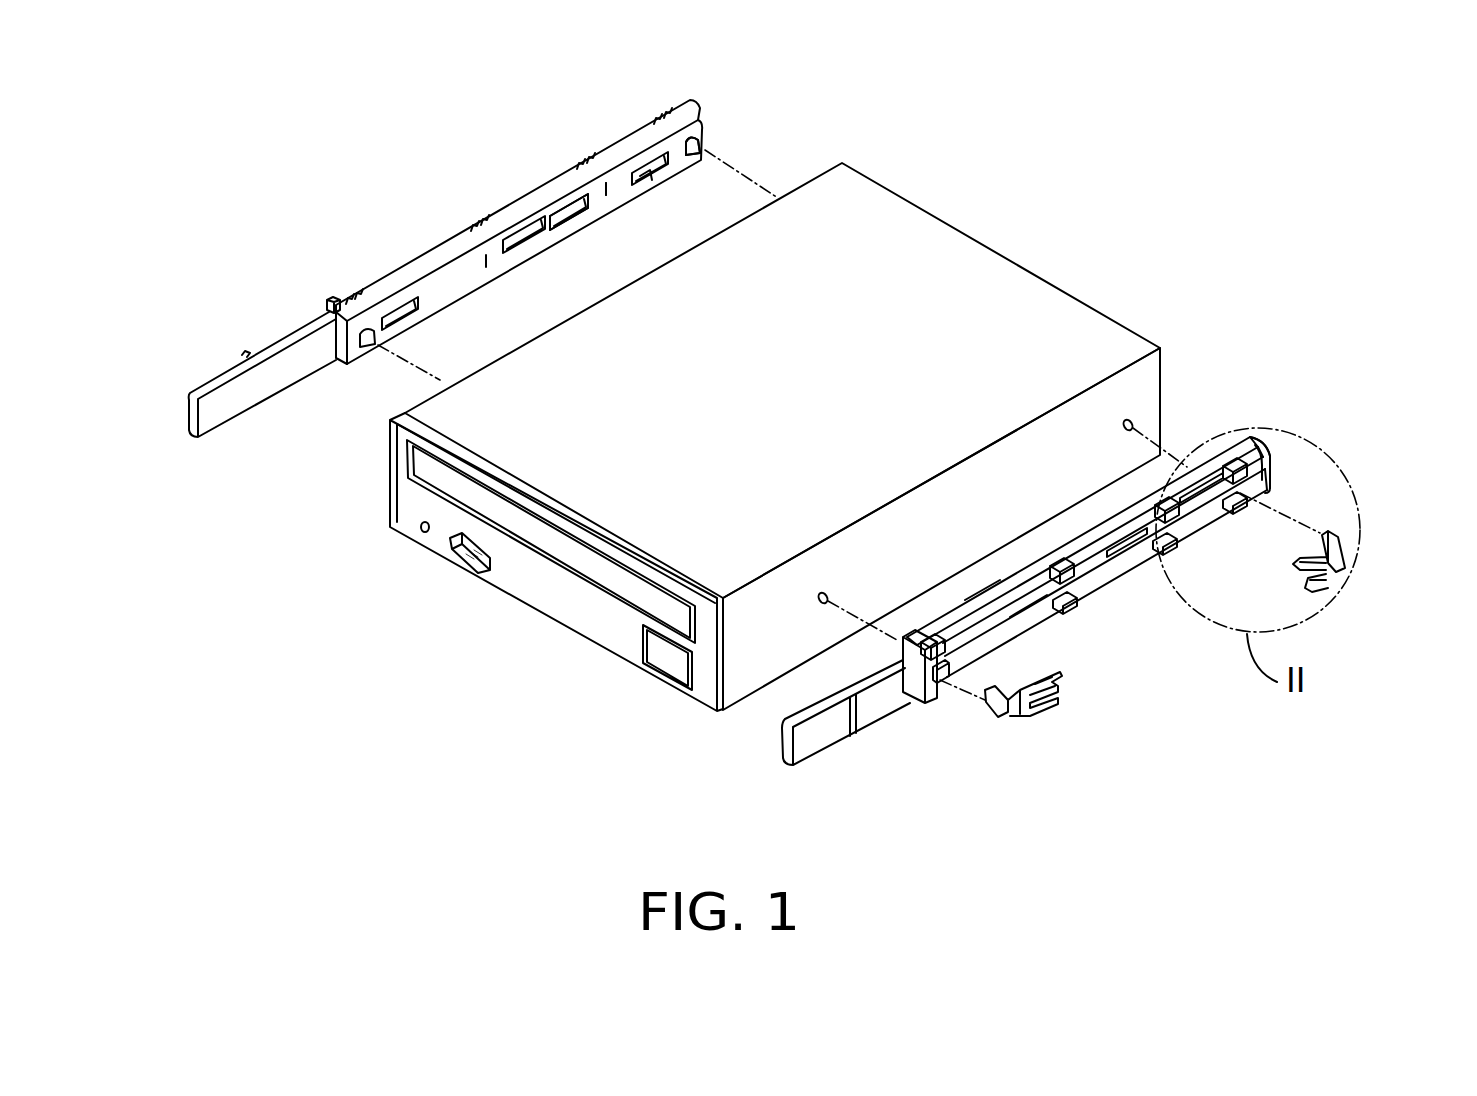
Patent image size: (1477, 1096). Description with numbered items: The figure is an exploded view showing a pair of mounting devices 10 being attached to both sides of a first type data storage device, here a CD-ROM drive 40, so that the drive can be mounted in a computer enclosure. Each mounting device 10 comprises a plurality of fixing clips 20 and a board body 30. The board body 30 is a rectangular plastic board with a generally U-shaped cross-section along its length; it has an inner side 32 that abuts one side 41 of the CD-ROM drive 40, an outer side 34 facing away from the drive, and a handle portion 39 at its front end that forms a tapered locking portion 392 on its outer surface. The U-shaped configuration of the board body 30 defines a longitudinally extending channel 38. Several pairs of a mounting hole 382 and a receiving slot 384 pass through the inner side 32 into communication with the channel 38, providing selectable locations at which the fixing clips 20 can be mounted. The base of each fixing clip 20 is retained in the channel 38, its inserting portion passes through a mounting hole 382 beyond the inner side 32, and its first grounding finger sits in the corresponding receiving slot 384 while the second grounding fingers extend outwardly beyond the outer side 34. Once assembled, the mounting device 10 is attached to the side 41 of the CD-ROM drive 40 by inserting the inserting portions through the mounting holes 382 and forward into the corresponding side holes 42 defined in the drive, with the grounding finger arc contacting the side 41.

The mounting device 10 is at (690, 100).
The fixing clip 20 is at (1346, 546).
The board body 30 is at (1276, 452).
The inner side 32 is at (437, 297).
The outer side 34 is at (529, 192).
The channel 38 is at (1257, 471).
The mounting hole 382 is at (694, 156).
The receiving slot 384 is at (577, 212).
The handle portion 39 is at (218, 375).
The tapered locking portion 392 is at (880, 727).
The CD-ROM drive 40 is at (953, 229).
The side 41 is at (1133, 395).
The side hole 42 is at (1122, 424).